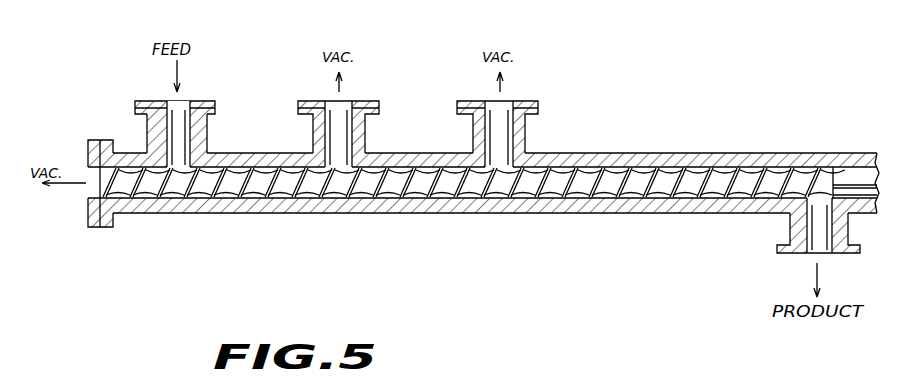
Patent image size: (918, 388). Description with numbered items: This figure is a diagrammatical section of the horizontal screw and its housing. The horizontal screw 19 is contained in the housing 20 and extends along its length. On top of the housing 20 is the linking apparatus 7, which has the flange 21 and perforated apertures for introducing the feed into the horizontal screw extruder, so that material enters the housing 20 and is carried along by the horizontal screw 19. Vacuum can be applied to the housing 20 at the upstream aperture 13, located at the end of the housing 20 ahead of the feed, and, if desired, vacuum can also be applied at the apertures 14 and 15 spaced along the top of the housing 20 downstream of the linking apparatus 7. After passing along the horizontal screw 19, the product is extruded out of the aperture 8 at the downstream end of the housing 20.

The linking apparatus 7 is at (156, 117).
The flange 21 is at (138, 103).
The upstream aperture 13 is at (90, 188).
The aperture 14 is at (342, 98).
The aperture 15 is at (500, 98).
The horizontal screw 19 is at (598, 153).
The housing 20 is at (728, 160).
The aperture 8 is at (813, 250).